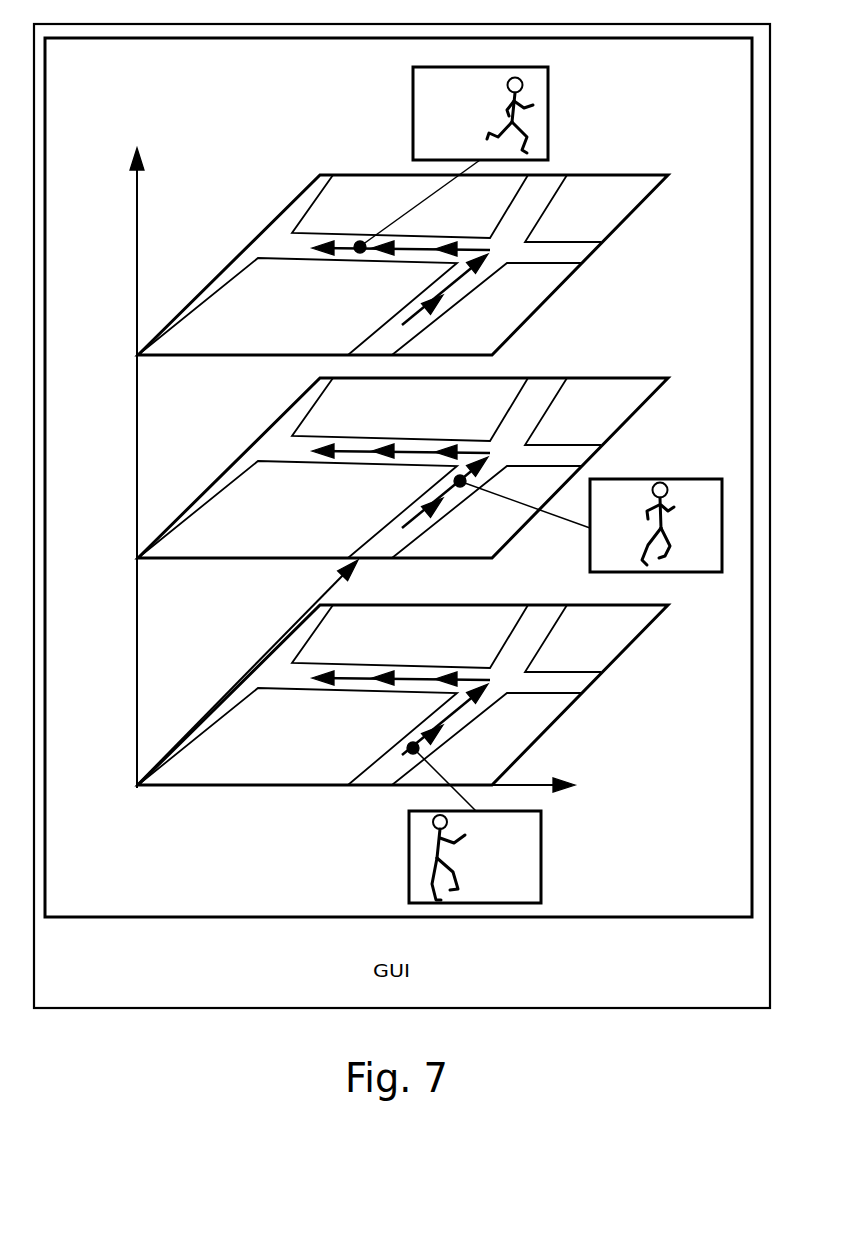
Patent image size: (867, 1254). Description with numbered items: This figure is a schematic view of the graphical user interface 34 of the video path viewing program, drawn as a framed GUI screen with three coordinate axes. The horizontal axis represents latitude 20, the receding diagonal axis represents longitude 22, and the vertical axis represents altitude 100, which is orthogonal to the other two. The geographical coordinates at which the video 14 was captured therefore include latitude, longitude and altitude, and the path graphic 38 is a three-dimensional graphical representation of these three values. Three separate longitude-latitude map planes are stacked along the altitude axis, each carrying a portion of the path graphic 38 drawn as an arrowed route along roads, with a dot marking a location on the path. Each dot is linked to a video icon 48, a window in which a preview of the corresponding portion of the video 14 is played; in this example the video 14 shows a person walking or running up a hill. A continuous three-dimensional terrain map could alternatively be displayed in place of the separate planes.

The video 14 is at (533, 90).
The latitude 20 is at (607, 808).
The longitude 22 is at (435, 579).
The graphical user interface 34 is at (770, 343).
The path graphic 38 is at (415, 253).
The video icon 48 is at (548, 125).
The altitude 100 is at (152, 128).